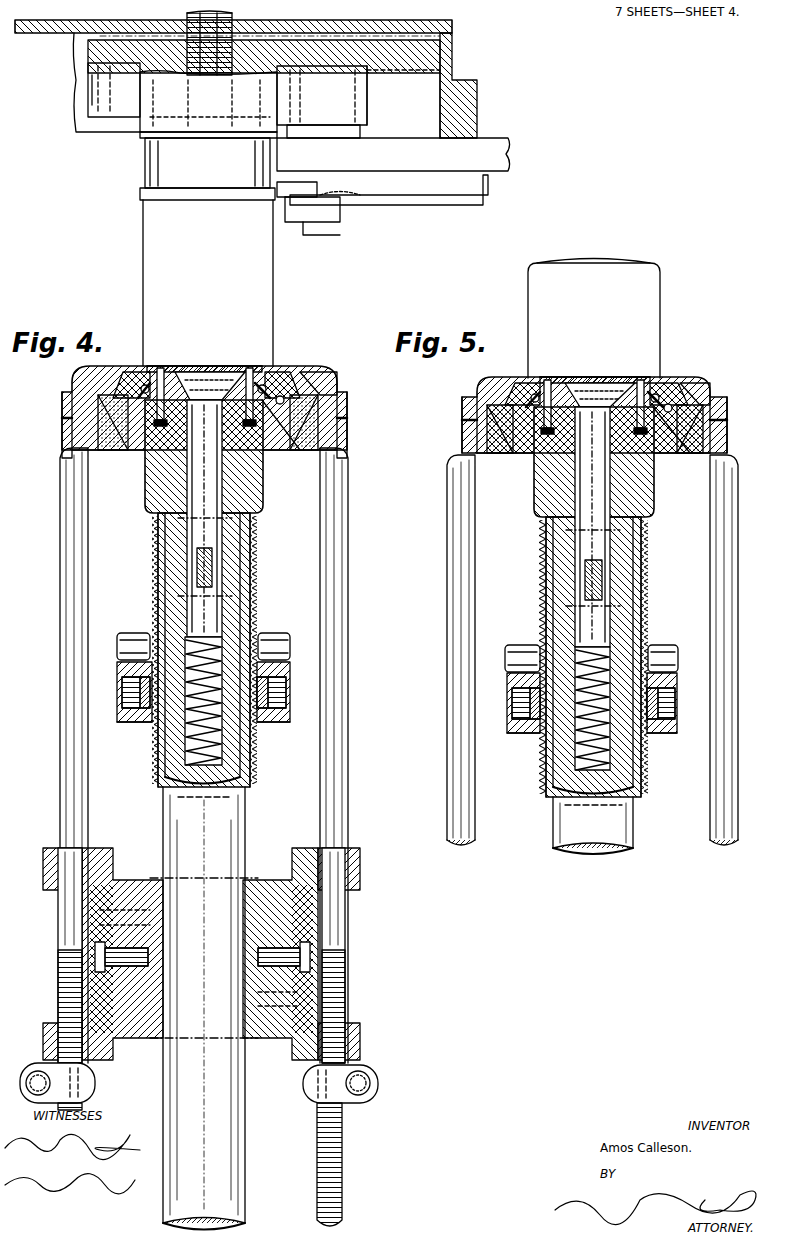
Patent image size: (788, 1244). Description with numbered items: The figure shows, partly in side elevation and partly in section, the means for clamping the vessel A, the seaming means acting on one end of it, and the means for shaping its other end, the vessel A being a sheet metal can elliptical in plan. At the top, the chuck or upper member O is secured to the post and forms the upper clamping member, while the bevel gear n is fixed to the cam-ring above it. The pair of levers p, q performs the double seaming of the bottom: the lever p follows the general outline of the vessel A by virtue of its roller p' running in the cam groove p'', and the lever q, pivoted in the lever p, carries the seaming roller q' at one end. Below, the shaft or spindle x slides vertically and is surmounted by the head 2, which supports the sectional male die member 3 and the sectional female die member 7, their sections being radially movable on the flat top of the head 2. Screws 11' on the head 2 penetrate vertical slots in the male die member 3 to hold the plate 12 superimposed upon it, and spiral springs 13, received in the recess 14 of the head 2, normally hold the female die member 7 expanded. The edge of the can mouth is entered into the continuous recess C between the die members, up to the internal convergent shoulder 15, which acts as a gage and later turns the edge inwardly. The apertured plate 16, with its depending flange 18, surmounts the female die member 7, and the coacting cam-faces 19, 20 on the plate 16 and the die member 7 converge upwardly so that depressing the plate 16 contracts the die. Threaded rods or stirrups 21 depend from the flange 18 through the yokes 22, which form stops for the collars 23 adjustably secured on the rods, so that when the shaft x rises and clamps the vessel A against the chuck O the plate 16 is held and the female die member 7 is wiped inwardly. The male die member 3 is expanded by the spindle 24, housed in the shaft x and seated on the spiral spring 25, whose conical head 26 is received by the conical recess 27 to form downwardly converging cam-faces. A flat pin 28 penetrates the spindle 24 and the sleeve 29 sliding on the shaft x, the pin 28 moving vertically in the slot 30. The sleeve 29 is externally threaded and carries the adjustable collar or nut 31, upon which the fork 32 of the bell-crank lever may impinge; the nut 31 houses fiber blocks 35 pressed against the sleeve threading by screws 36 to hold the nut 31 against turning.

In FIG. 4, the bevel gear n is at (55, 30).
In FIG. 4, the chuck or upper member O is at (146, 156).
In FIG. 4, the lever p is at (300, 117).
In FIG. 4, the roller p' is at (322, 102).
In FIG. 4, the cam groove p'' is at (403, 102).
In FIG. 4, the lever q is at (389, 204).
In FIG. 4, the seaming roller q' is at (308, 218).
In FIG. 4, the vessel A is at (274, 297).
In FIG. 5, the vessel A is at (661, 311).
In FIG. 4, the head 2 is at (276, 451).
In FIG. 5, the head 2 is at (667, 454).
In FIG. 4, the sectional male die member 3 is at (274, 372).
In FIG. 5, the sectional male die member 3 is at (660, 378).
In FIG. 4, the sectional female die member 7 is at (122, 368).
In FIG. 5, the sectional female die member 7 is at (522, 376).
In FIG. 4, the screws 11' is at (160, 377).
In FIG. 5, the screws 11' is at (552, 387).
In FIG. 4, the plate 12 is at (218, 368).
In FIG. 5, the plate 12 is at (606, 379).
In FIG. 4, the spiral springs 13 is at (126, 440).
In FIG. 5, the spiral springs 13 is at (482, 385).
In FIG. 4, the recess 14 is at (296, 442).
In FIG. 5, the recess 14 is at (516, 453).
In FIG. 4, the internal convergent shoulder 15 is at (279, 425).
In FIG. 5, the internal convergent shoulder 15 is at (669, 430).
In FIG. 4, the apertured plate 16 is at (300, 376).
In FIG. 4, the depending flange 18 is at (338, 438).
In FIG. 4, the cam-face 19 is at (322, 368).
In FIG. 5, the cam-face 19 is at (695, 377).
In FIG. 4, the cam-face 20 is at (294, 372).
In FIG. 5, the cam-face 20 is at (670, 380).
In FIG. 4, the threaded rods or stirrups 21 is at (345, 733).
In FIG. 5, the threaded rods or stirrups 21 is at (738, 811).
In FIG. 4, the yokes 22 is at (346, 993).
In FIG. 4, the collars 23 is at (378, 1088).
In FIG. 4, the spindle 24 is at (215, 609).
In FIG. 5, the spindle 24 is at (605, 624).
In FIG. 4, the spiral spring 25 is at (215, 744).
In FIG. 5, the spiral spring 25 is at (605, 762).
In FIG. 4, the conical head 26 is at (252, 366).
In FIG. 5, the conical head 26 is at (641, 378).
In FIG. 4, the conical recess 27 is at (180, 368).
In FIG. 5, the conical recess 27 is at (568, 379).
In FIG. 4, the flat pin 28 is at (212, 571).
In FIG. 5, the flat pin 28 is at (602, 579).
In FIG. 4, the sleeve 29 is at (258, 541).
In FIG. 5, the sleeve 29 is at (647, 548).
In FIG. 4, the slot 30 is at (160, 605).
In FIG. 5, the slot 30 is at (534, 618).
In FIG. 4, the adjustable collar or nut 31 is at (286, 673).
In FIG. 5, the adjustable collar or nut 31 is at (675, 683).
In FIG. 4, the fork 32 is at (285, 650).
In FIG. 5, the fork 32 is at (677, 657).
In FIG. 4, the fiber blocks 35 is at (138, 722).
In FIG. 5, the fiber blocks 35 is at (526, 733).
In FIG. 4, the screws 36 is at (122, 694).
In FIG. 5, the screws 36 is at (512, 711).
In FIG. 4, the continuous recess C is at (267, 1040).
In FIG. 4, the shaft or spindle x is at (246, 1108).
In FIG. 5, the shaft or spindle x is at (634, 825).